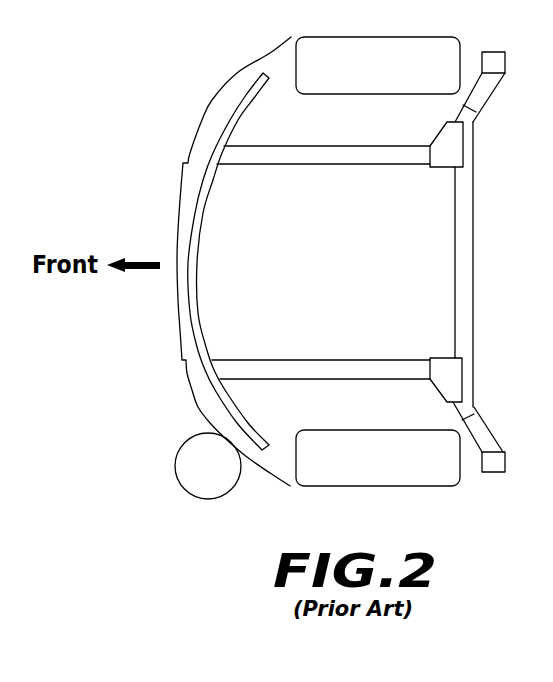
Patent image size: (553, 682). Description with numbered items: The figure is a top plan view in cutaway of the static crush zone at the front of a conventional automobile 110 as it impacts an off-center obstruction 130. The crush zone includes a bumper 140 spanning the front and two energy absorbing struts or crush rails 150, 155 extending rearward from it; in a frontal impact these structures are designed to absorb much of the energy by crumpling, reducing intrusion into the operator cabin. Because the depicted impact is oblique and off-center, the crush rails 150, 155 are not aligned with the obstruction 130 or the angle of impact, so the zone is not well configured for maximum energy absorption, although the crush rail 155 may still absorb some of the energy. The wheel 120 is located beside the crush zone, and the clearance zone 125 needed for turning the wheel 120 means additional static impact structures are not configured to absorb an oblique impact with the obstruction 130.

The automobile 110 is at (420, 243).
The wheel 120 is at (425, 467).
The clearance zone 125 is at (357, 402).
The obstruction 130 is at (190, 463).
The bumper 140 is at (187, 193).
The crush rail 150 is at (328, 153).
The crush rail 155 is at (295, 368).